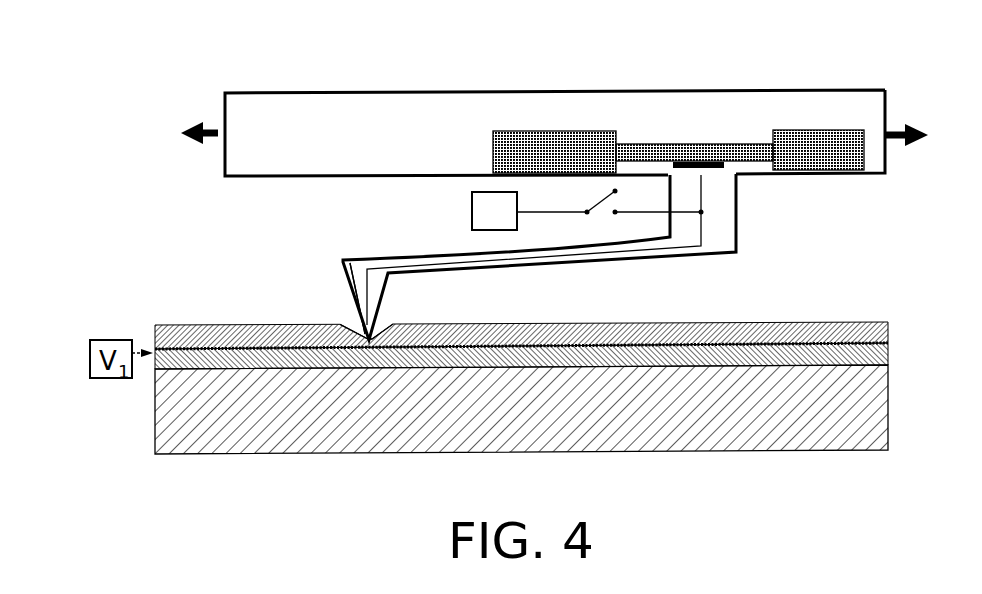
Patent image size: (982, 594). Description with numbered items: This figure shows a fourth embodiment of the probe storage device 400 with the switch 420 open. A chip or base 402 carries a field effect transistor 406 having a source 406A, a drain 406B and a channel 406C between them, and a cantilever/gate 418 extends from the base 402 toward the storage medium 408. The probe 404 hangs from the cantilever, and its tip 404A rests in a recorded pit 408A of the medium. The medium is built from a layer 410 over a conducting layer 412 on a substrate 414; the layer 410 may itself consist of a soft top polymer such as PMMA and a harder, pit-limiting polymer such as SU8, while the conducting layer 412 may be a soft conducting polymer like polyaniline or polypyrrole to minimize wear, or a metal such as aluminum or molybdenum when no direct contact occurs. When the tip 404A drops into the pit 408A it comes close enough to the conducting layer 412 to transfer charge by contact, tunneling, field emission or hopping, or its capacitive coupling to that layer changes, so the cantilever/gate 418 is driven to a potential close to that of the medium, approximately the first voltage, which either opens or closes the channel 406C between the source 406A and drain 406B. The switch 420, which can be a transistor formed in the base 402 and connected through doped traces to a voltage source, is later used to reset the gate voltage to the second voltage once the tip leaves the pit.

The scanning probe assembly 400 is at (524, 257).
The chip or base 402 is at (350, 105).
The probe 404 is at (362, 305).
The tip 404A is at (375, 335).
The field effect transistor 406 is at (668, 114).
The source 406A is at (543, 140).
The drain 406B is at (832, 140).
The channel 406C is at (685, 143).
The substrate sample 408 is at (521, 366).
The indentation in surface layer 408A is at (345, 328).
The layer 410 is at (717, 333).
The conducting layer 412 is at (803, 345).
The base substrate 414 is at (738, 440).
The cantilever/gate 418 is at (724, 170).
The switch 420 is at (612, 223).